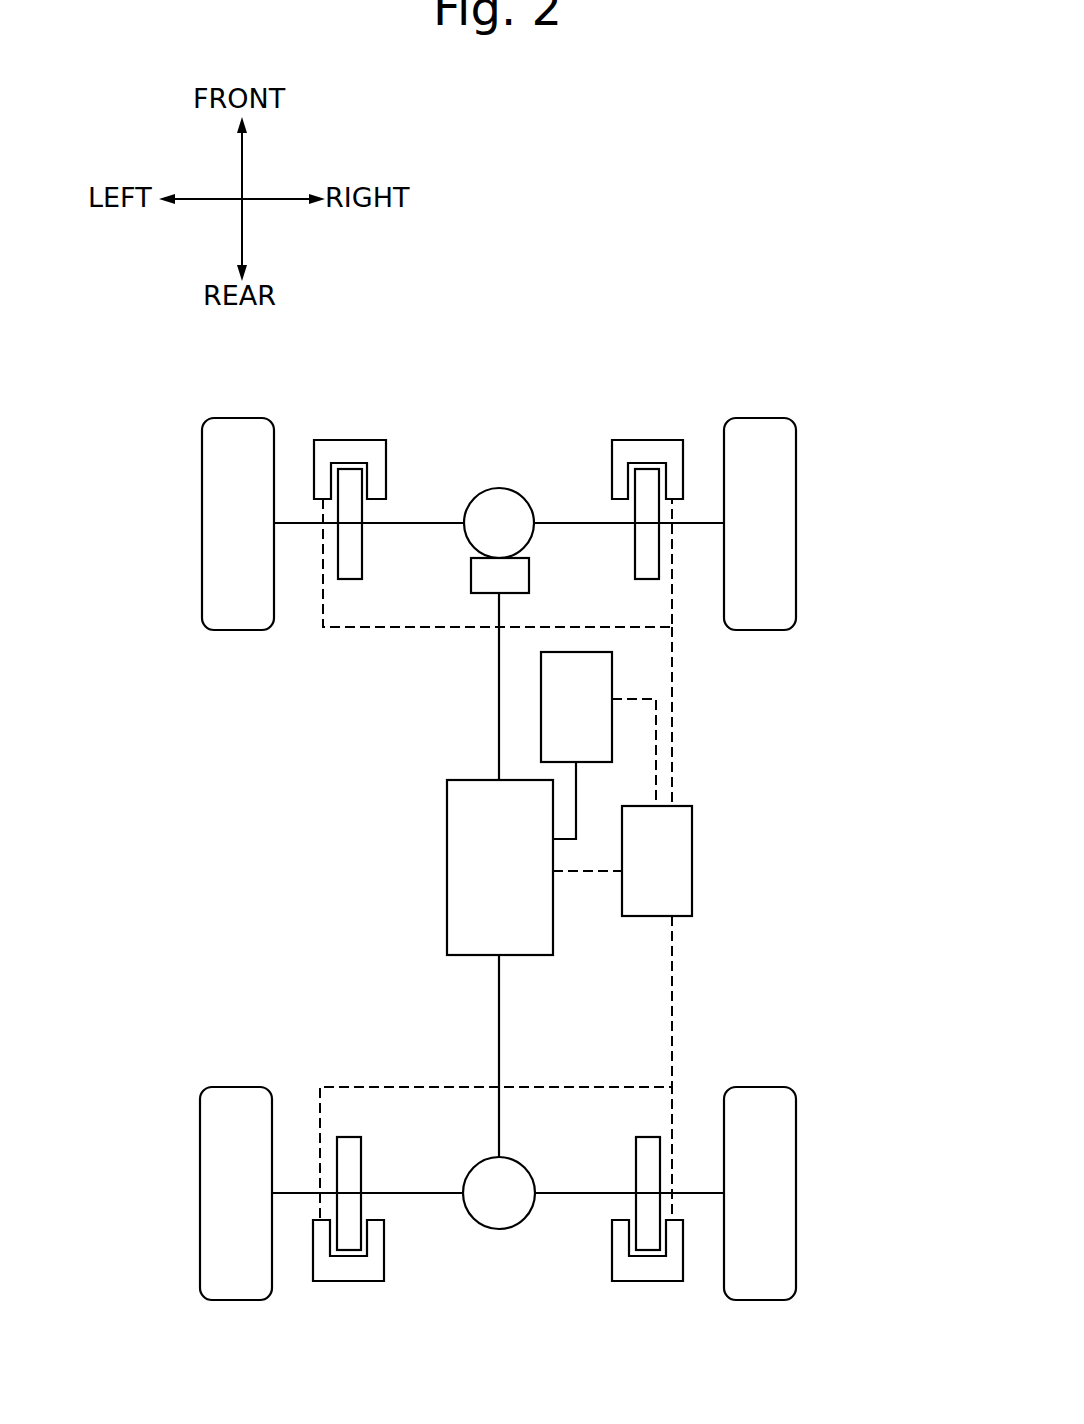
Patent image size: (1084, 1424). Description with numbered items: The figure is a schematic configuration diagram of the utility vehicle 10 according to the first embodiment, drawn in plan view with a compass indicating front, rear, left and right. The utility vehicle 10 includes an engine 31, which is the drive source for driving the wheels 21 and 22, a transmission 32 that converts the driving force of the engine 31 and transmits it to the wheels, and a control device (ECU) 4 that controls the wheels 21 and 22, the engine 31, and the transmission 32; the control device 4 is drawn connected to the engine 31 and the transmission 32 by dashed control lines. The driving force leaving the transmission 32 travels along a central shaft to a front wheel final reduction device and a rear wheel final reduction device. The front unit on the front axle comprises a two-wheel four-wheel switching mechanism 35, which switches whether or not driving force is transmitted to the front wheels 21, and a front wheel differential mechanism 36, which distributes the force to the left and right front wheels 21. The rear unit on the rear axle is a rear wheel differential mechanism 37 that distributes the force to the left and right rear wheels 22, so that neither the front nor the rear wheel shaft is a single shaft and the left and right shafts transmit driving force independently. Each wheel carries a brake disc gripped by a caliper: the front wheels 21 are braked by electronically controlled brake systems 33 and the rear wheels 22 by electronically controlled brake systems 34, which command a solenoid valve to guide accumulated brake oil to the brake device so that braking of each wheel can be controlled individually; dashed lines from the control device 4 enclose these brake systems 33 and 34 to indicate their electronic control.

The utility vehicle 10 is at (768, 333).
The front wheels 21 is at (221, 535).
The rear wheels 22 is at (210, 1183).
The engine 31 is at (594, 671).
The transmission 32 is at (461, 830).
The front electronically controlled brake system 33 is at (334, 450).
The rear electronically controlled brake system 34 is at (352, 1270).
The two-wheel four-wheel switching mechanism 35 is at (520, 578).
The front wheel differential mechanism 36 is at (493, 505).
The rear wheel differential mechanism 37 is at (497, 1215).
The control device (ECU) 4 is at (683, 858).